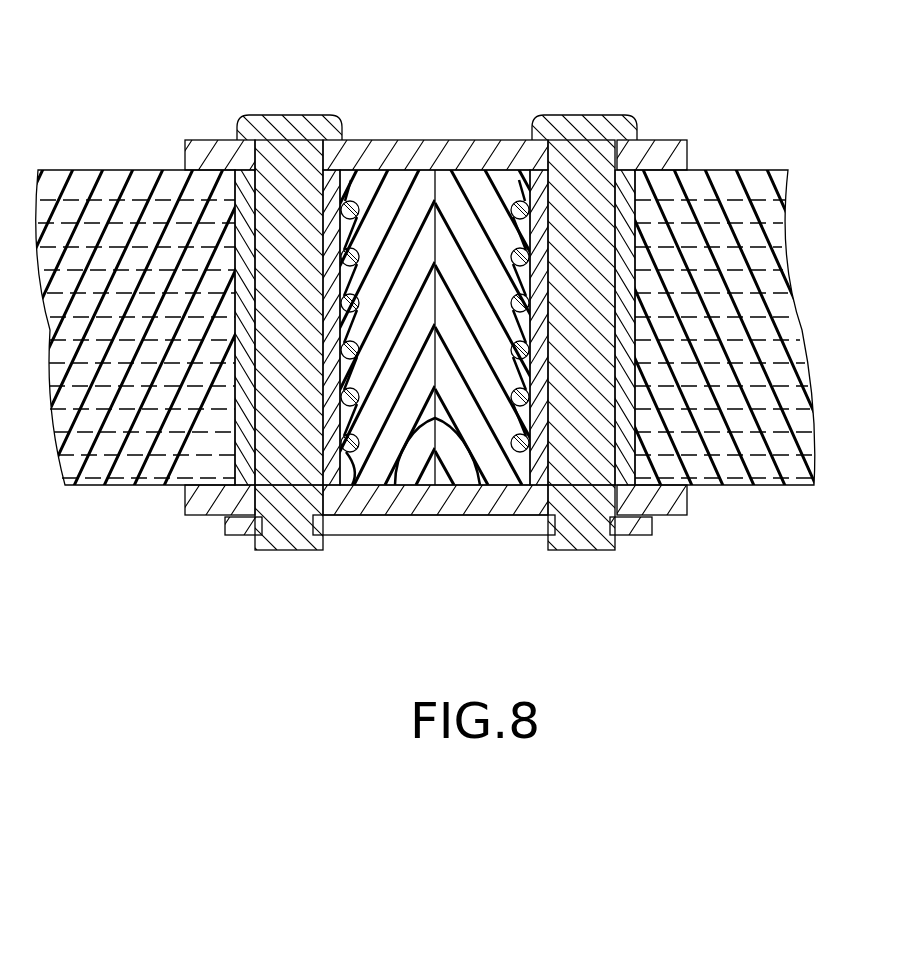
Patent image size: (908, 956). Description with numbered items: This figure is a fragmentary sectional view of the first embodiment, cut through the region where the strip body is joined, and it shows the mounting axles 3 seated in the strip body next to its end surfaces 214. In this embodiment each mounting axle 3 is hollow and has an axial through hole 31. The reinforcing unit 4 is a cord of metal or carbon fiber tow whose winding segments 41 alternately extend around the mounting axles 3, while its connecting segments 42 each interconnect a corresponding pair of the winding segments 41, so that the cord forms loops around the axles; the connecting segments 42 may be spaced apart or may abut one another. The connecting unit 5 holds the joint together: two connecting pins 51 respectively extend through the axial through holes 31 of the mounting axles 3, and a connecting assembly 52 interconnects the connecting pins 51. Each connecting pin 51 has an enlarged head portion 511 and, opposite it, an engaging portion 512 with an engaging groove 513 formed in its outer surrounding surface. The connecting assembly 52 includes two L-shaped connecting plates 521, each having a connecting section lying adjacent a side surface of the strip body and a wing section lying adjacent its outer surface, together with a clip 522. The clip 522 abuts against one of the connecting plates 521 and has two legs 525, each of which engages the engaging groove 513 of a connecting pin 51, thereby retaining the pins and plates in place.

The mounting axle 3 is at (635, 268).
The axial through hole 31 is at (250, 340).
The connecting segment 42 is at (130, 208).
The reinforcing unit 4 is at (366, 196).
The winding segment 41 is at (362, 465).
The connecting unit 5 is at (454, 321).
The connecting pin 51 is at (454, 322).
The head portion 511 is at (620, 130).
The engaging portion 512 is at (585, 543).
The engaging groove 513 is at (565, 537).
The connecting assembly 52 is at (454, 340).
The connecting plate 521 is at (453, 154).
The clip 522 is at (240, 536).
The leg 525 is at (638, 524).
The end surface 214 is at (445, 468).